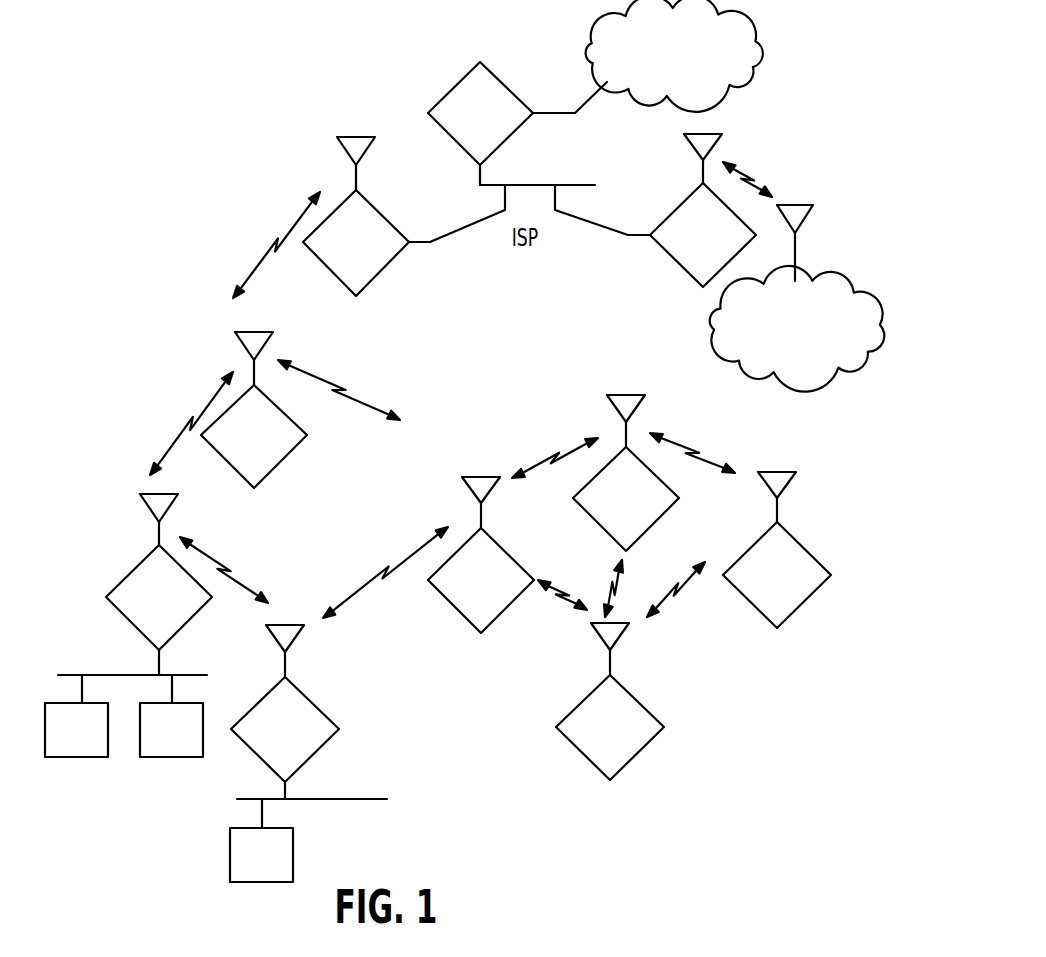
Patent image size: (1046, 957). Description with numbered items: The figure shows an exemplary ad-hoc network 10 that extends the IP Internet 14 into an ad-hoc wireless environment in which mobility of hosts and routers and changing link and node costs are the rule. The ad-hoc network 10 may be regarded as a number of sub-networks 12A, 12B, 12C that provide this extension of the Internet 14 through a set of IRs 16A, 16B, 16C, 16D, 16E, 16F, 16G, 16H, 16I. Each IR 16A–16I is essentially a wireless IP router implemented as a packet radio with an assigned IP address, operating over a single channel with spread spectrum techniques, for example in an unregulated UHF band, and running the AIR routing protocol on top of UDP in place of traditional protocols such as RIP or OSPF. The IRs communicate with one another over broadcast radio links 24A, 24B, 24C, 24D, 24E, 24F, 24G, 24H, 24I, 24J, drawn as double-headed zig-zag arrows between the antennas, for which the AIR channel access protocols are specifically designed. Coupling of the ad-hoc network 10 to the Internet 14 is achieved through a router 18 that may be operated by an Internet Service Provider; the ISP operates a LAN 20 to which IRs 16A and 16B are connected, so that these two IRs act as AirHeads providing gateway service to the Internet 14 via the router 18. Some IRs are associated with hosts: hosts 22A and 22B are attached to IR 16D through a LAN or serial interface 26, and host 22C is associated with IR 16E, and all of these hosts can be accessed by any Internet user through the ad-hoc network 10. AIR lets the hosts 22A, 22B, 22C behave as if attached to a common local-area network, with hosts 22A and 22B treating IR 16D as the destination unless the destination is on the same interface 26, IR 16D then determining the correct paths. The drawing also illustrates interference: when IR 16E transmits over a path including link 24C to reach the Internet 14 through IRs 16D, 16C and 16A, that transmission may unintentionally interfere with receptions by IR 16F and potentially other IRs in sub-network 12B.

The ad-hoc network 10 is at (167, 155).
The sub-network 12A is at (123, 492).
The sub-network 12B is at (725, 665).
The sub-network 12C is at (785, 352).
The Internet 14 is at (666, 82).
The IR 16A is at (339, 267).
The IR 16B is at (686, 260).
The IR 16C is at (237, 460).
The IR 16D is at (142, 622).
The IR 16E is at (268, 754).
The IR 16F is at (464, 605).
The IR 16G is at (609, 523).
The IR 16H is at (760, 600).
The IR 16I is at (596, 752).
The router 18 is at (469, 147).
The LAN 20 is at (523, 185).
The host 22A is at (59, 754).
The host 22B is at (155, 754).
The host 22C is at (244, 879).
The broadcast radio link 24A is at (268, 245).
The broadcast radio link 24B is at (184, 423).
The broadcast radio link 24C is at (339, 381).
The broadcast radio link 24D is at (385, 572).
The broadcast radio link 24E is at (224, 567).
The broadcast radio link 24F is at (555, 449).
The broadcast radio link 24G is at (692, 446).
The broadcast radio link 24H is at (679, 594).
The broadcast radio link 24I is at (632, 585).
The broadcast radio link 24J is at (560, 605).
The LAN or serial interface 26 is at (110, 675).